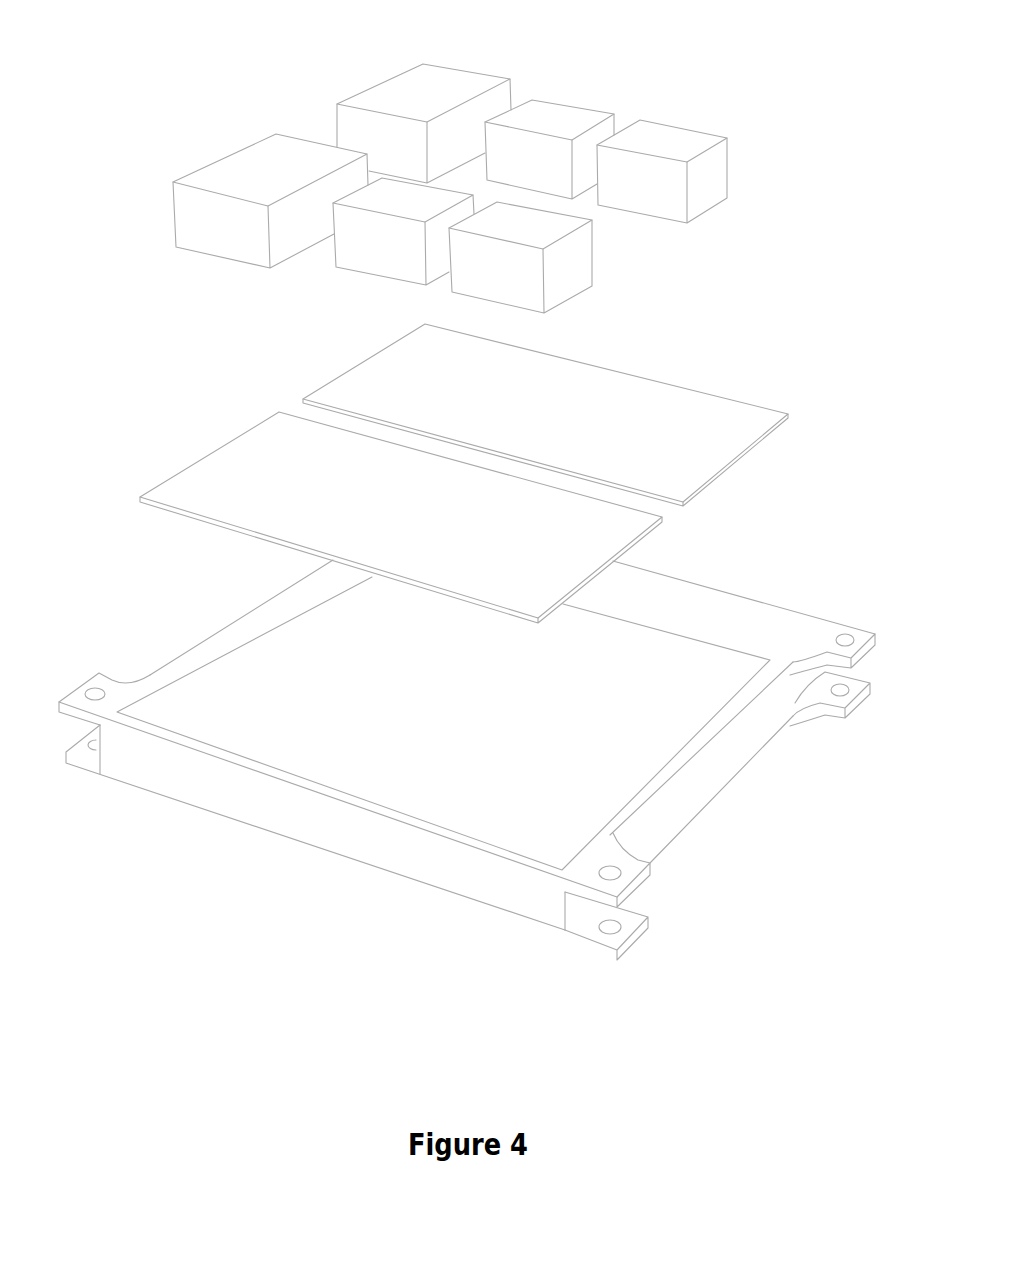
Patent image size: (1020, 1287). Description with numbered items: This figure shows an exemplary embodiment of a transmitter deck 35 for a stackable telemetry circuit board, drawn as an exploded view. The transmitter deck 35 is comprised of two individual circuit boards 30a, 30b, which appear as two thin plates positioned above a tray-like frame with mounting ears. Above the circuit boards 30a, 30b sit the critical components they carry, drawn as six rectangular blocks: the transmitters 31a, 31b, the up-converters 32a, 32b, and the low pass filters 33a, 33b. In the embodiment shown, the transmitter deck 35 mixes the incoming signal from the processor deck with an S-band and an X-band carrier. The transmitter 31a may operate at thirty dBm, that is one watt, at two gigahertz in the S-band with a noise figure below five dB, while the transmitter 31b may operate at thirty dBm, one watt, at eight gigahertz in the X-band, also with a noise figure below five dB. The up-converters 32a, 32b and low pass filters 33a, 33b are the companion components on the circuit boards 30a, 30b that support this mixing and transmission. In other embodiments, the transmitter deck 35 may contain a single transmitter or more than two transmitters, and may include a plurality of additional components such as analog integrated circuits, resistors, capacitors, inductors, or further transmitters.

The circuit board 30a is at (729, 419).
The circuit board 30b is at (197, 487).
The transmitter 31a is at (449, 78).
The transmitter 31b is at (233, 177).
The up-converter 32a is at (557, 125).
The up-converter 32b is at (378, 258).
The low pass filter 33a is at (680, 143).
The low pass filter 33b is at (567, 277).
The transmitter deck 35 is at (753, 625).